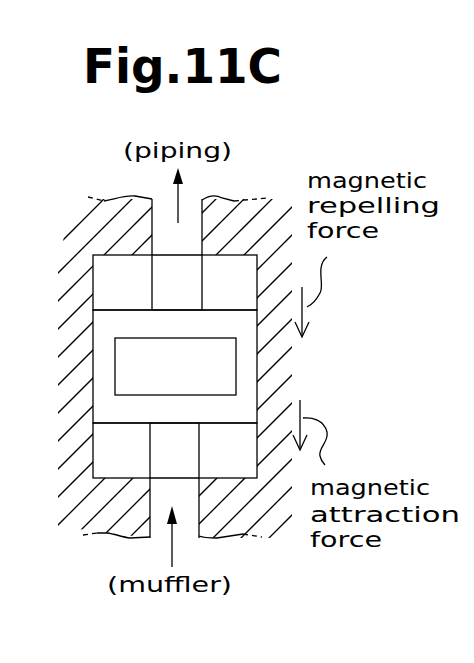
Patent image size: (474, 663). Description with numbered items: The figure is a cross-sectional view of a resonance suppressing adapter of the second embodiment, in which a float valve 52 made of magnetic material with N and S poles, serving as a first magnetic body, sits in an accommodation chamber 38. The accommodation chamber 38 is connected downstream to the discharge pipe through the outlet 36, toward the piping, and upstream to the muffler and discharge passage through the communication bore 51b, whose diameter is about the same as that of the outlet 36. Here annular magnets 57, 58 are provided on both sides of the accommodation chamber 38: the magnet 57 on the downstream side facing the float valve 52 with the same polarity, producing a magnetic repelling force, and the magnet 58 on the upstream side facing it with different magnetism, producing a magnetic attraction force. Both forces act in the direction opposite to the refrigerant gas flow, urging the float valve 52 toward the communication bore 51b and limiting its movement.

The outlet 36 is at (204, 230).
The accommodation chamber 38 is at (85, 395).
The communication bore 51b is at (201, 508).
The float valve 52 is at (236, 370).
The annular magnet 57 is at (99, 288).
The annular magnet 58 is at (100, 453).